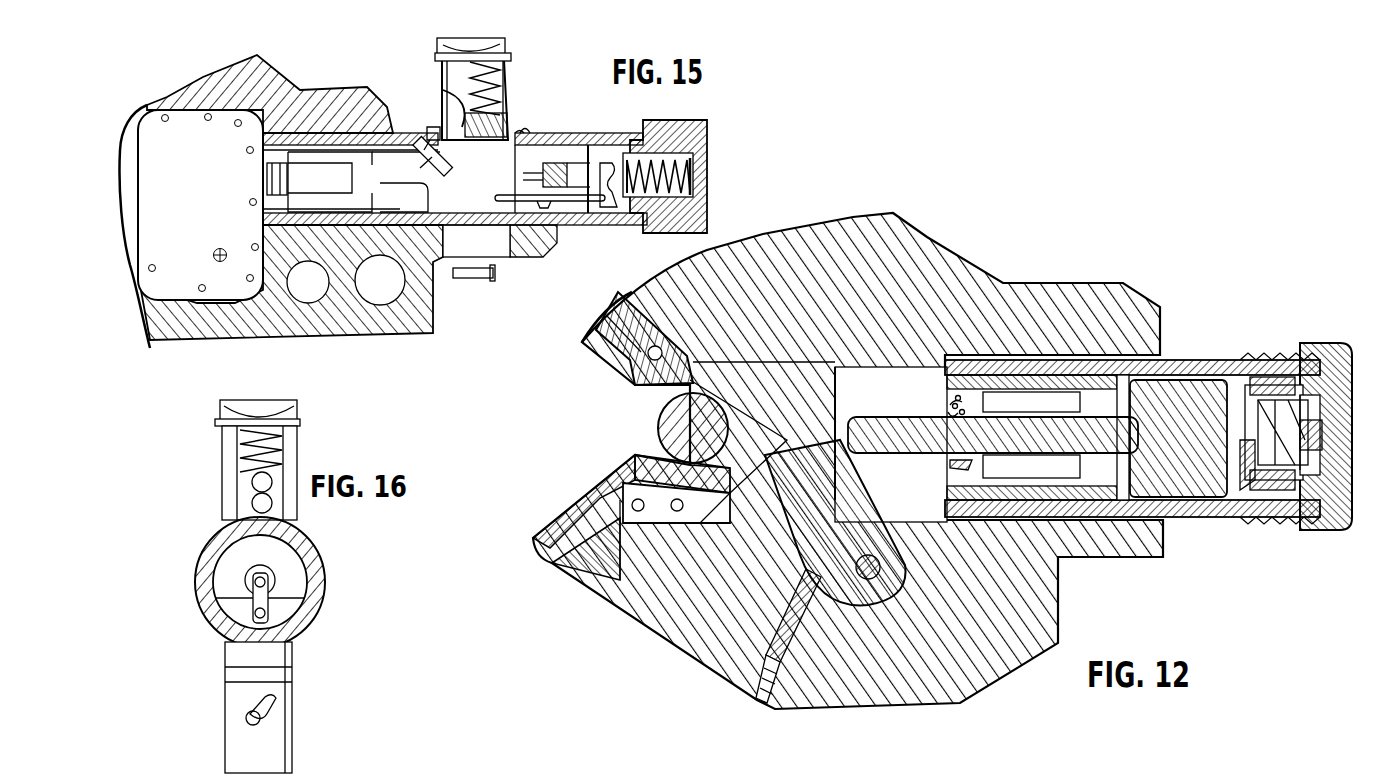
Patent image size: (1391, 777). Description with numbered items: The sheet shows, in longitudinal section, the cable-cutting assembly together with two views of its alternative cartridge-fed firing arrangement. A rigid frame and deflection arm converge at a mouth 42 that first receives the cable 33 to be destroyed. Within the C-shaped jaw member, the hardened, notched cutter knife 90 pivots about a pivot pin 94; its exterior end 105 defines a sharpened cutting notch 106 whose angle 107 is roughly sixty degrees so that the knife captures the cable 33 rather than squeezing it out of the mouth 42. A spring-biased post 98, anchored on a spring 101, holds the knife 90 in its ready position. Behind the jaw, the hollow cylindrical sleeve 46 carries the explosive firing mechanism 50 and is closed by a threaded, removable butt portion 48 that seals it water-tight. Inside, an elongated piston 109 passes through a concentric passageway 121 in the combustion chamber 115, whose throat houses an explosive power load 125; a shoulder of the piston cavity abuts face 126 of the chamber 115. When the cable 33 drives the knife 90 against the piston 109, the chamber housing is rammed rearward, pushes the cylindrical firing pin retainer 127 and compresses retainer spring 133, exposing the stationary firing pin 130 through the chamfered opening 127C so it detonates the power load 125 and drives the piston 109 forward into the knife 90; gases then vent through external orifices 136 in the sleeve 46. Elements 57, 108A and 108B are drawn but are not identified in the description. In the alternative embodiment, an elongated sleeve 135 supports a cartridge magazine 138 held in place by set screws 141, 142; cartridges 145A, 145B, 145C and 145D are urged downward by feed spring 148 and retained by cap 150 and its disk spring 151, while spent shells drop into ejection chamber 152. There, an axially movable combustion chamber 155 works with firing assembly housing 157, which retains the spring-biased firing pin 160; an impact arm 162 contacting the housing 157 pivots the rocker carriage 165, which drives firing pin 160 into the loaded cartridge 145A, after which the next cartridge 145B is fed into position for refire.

In FIG. 12, the cable 33 is at (660, 424).
In FIG. 12, the mouth 42 is at (607, 384).
In FIG. 16, the cylindrical sleeve 46 is at (318, 554).
In FIG. 12, the cylindrical sleeve 46 is at (1210, 517).
In FIG. 12, the butt portion 48 is at (1322, 528).
In FIG. 12, the firing mechanism 50 is at (1220, 347).
In FIG. 15, the holes 57 is at (347, 280).
In FIG. 12, the cutter knife 90 is at (835, 522).
In FIG. 12, the pivot pin 94 is at (876, 567).
In FIG. 12, the post 98 is at (770, 660).
In FIG. 12, the spring 101 is at (765, 700).
In FIG. 12, the exterior end of cutter knife 105 is at (762, 427).
In FIG. 12, the cutting notch 106 is at (686, 531).
In FIG. 12, the angle 107 is at (760, 437).
In FIG. 12, the upper jaw 108A is at (644, 347).
In FIG. 12, the lower jaw 108B is at (675, 462).
In FIG. 12, the piston 109 is at (947, 454).
In FIG. 12, the combustion chamber 115 is at (1095, 435).
In FIG. 12, the passageway 121 is at (948, 410).
In FIG. 12, the power load 125 is at (1037, 438).
In FIG. 12, the face 126 is at (1228, 517).
In FIG. 12, the firing pin retainer 127 is at (1267, 433).
In FIG. 12, the chamfered opening 127C is at (1248, 470).
In FIG. 12, the firing pin 130 is at (1290, 432).
In FIG. 12, the retainer spring 133 is at (1330, 455).
In FIG. 15, the elongated sleeve 135 is at (641, 116).
In FIG. 12, the external orifices 136 is at (948, 396).
In FIG. 15, the cartridge magazine 138 is at (516, 100).
In FIG. 16, the cartridge magazine 138 is at (310, 460).
In FIG. 15, the set screw 141 is at (432, 128).
In FIG. 15, the set screw 142 is at (532, 132).
In FIG. 15, the firing cartridge 145A is at (480, 272).
In FIG. 16, the firing cartridge 145A is at (272, 705).
In FIG. 15, the firing cartridge 145B is at (435, 160).
In FIG. 15, the firing cartridge 145C is at (462, 118).
In FIG. 16, the firing cartridge 145C is at (252, 500).
In FIG. 15, the firing cartridge 145D is at (447, 94).
In FIG. 16, the firing cartridge 145D is at (252, 477).
In FIG. 15, the feed spring 148 is at (500, 100).
In FIG. 16, the feed spring 148 is at (240, 438).
In FIG. 15, the cap 150 is at (433, 58).
In FIG. 16, the cap 150 is at (310, 417).
In FIG. 15, the disk spring 151 is at (471, 46).
In FIG. 16, the disk spring 151 is at (275, 398).
In FIG. 15, the ejection chamber 152 is at (481, 240).
In FIG. 16, the ejection chamber 152 is at (244, 696).
In FIG. 15, the combustion chamber 155 is at (406, 180).
In FIG. 15, the firing assembly housing 157 is at (553, 167).
In FIG. 15, the firing pin 160 is at (642, 171).
In FIG. 16, the firing pin 160 is at (235, 624).
In FIG. 15, the impact arm 162 is at (578, 202).
In FIG. 16, the impact arm 162 is at (268, 605).
In FIG. 15, the rocker carriage 165 is at (608, 208).
In FIG. 16, the rocker carriage 165 is at (265, 595).